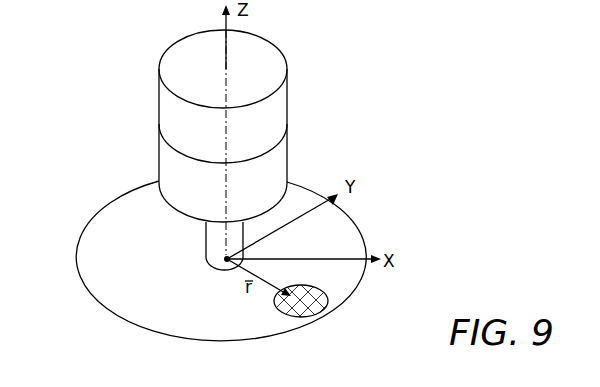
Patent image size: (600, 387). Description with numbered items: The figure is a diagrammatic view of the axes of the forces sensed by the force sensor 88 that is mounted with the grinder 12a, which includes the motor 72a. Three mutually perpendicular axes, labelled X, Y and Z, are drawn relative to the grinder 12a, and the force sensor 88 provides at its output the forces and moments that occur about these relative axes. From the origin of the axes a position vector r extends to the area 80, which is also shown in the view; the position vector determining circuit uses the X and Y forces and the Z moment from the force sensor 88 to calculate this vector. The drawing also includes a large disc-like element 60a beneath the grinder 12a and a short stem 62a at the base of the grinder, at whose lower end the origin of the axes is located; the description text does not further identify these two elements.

The grinder 12a is at (191, 126).
The force sensor 88 is at (164, 114).
The motor 72a is at (166, 168).
The base plate 60a is at (98, 268).
The probe tip 62a is at (211, 250).
The area 80 is at (275, 301).